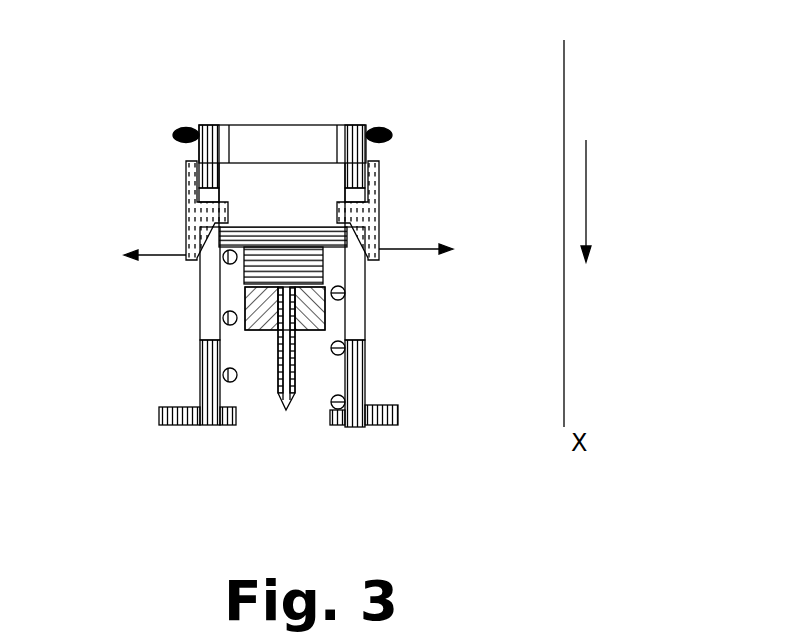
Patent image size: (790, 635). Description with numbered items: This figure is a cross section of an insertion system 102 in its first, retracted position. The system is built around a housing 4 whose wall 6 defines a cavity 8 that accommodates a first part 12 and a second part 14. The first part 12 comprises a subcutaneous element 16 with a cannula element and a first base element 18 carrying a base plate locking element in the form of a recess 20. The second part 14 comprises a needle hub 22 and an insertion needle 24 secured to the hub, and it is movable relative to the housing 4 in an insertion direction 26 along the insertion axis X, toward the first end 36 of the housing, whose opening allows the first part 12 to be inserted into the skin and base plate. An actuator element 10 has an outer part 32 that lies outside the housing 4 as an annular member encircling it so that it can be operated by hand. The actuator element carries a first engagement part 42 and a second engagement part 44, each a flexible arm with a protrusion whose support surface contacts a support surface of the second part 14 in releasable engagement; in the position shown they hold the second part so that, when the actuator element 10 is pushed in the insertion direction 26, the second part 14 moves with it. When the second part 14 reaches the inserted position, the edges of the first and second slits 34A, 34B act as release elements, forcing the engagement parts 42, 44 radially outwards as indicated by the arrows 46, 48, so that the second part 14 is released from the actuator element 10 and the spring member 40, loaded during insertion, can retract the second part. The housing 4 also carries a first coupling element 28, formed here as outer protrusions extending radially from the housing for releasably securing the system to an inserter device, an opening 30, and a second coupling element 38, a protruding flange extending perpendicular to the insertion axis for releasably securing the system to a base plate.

The insertion system 102 is at (142, 115).
The first coupling element 28 is at (186, 127).
The opening 30 is at (285, 140).
The actuator element 10 is at (186, 190).
The outer part 32 is at (380, 182).
The second engagement part 44 is at (186, 237).
The first engagement part 42 is at (380, 215).
The arrow 48 is at (153, 252).
The arrow 46 is at (430, 249).
The second part 14 is at (243, 236).
The needle hub 22 is at (289, 236).
The recess 20 is at (324, 278).
The first part 12 is at (245, 302).
The first base element 18 is at (262, 330).
The subcutaneous element 16 is at (310, 380).
The insertion needle 24 is at (282, 395).
The first end 36 is at (273, 423).
The first slit 34A is at (355, 313).
The second slit 34B is at (205, 360).
The spring member 40 is at (340, 337).
The cavity 8 is at (340, 363).
The wall 6 is at (357, 390).
The second coupling element 38 is at (157, 417).
The housing 4 is at (190, 426).
The insertion direction 26 is at (587, 195).